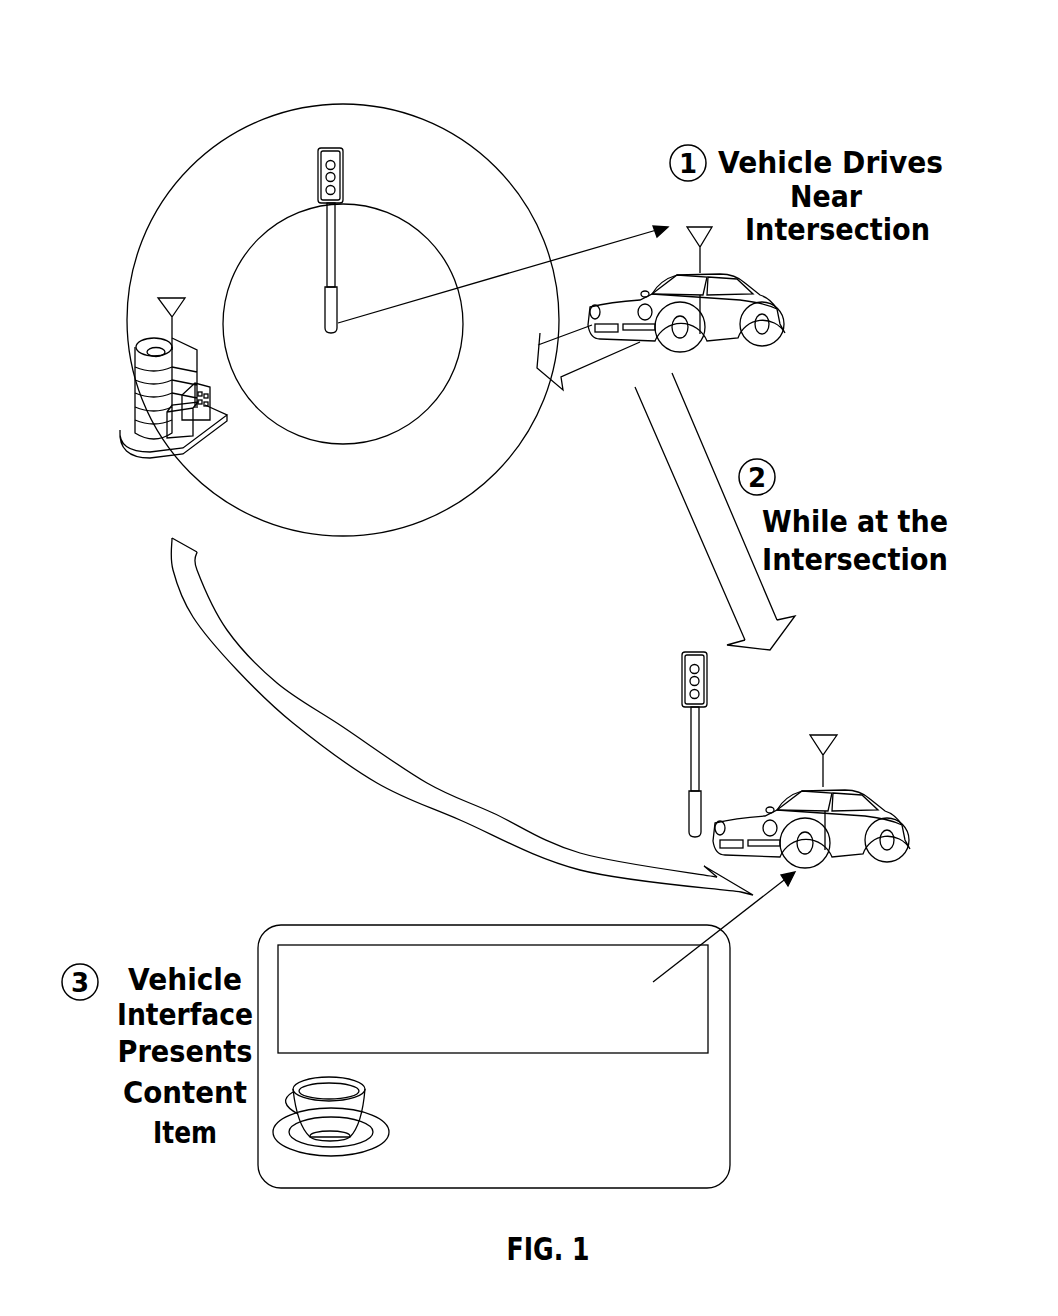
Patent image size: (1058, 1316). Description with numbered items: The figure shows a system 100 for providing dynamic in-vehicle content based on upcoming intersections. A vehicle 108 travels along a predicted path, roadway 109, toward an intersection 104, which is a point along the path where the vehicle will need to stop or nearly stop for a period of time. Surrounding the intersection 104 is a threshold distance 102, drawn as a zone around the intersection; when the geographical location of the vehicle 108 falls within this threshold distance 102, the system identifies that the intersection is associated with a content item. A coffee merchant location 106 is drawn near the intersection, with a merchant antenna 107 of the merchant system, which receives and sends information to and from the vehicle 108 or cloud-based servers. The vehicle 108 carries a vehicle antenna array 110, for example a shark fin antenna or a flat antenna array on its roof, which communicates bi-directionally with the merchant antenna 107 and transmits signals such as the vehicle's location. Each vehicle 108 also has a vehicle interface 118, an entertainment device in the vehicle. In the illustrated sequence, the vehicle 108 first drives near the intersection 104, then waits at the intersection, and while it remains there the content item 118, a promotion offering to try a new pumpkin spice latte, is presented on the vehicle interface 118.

The system 100 is at (125, 40).
The threshold distance 102 is at (197, 162).
The intersection 104 is at (327, 262).
The business location (Starbucks) 106 is at (132, 420).
The merchant antenna 107 is at (172, 298).
The vehicle 108 is at (680, 275).
The roadway 109 is at (573, 332).
The vehicle antenna array 110 is at (700, 227).
The vehicle interface 118 is at (327, 925).